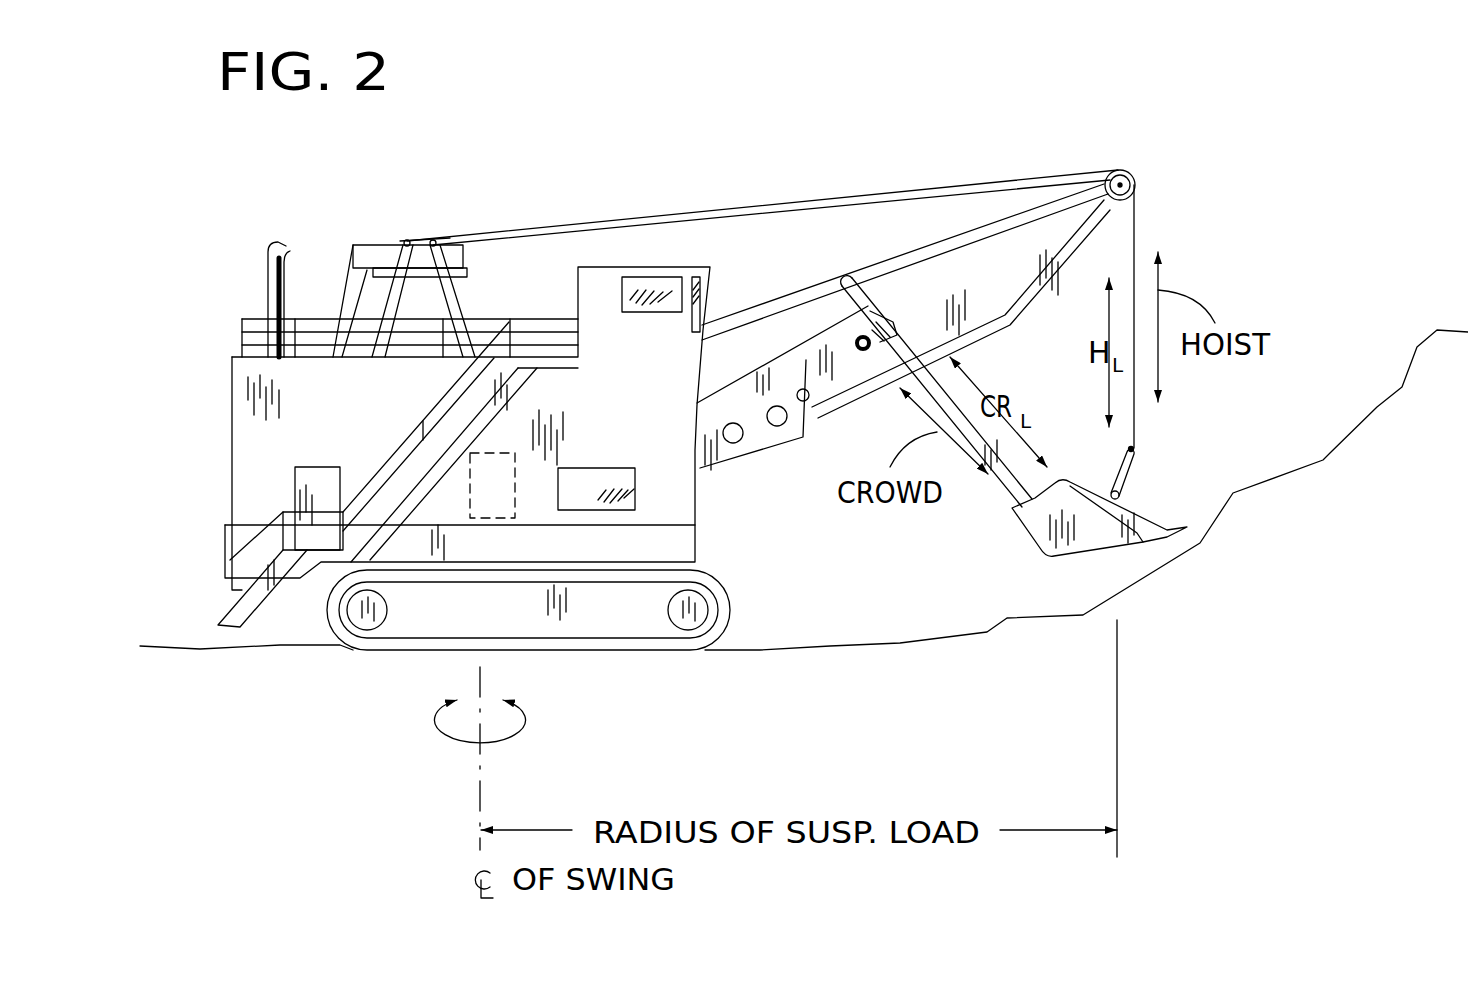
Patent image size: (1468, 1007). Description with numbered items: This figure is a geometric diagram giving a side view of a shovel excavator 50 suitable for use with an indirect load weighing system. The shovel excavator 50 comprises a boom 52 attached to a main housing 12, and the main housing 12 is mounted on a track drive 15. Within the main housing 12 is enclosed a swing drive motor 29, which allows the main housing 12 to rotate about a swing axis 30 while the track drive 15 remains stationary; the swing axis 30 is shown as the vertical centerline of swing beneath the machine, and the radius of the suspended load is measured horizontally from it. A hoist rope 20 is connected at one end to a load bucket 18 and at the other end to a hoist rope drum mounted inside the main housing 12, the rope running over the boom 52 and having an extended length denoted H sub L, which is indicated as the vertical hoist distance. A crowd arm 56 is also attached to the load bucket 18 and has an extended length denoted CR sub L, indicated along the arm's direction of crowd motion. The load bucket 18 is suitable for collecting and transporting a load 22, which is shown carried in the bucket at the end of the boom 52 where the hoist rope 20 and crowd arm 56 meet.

The shovel excavator 50 is at (724, 141).
The main housing 12 is at (690, 268).
The track drive 15 is at (722, 594).
The load bucket 18 is at (1097, 553).
The hoist rope 20 is at (1131, 433).
The load 22 is at (1095, 525).
The swing drive motor 29 is at (506, 522).
The swing axis 30 is at (477, 793).
The boom 52 is at (980, 328).
The crowd arm 56 is at (1012, 497).